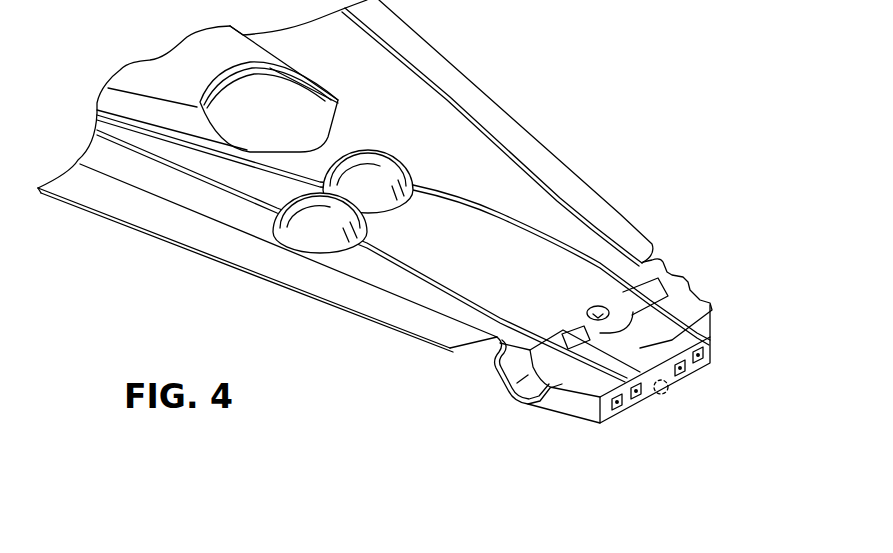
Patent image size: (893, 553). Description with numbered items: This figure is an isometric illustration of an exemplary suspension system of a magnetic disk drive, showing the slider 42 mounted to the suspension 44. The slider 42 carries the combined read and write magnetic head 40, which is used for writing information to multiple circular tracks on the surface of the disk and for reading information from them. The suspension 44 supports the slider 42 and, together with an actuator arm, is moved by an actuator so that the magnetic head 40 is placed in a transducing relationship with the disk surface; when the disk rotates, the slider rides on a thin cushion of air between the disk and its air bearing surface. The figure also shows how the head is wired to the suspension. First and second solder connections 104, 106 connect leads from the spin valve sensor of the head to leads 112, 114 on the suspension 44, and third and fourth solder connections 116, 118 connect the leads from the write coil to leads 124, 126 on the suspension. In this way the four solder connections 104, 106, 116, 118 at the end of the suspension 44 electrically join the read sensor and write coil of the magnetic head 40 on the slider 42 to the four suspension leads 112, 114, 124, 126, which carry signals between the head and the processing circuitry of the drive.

The magnetic head 40 is at (663, 396).
The slider 42 is at (548, 414).
The suspension 44 is at (374, 191).
The first solder connection 104 is at (602, 412).
The second solder connection 106 is at (704, 354).
The lead 112 is at (390, 262).
The lead 114 is at (571, 248).
The third solder connection 116 is at (634, 401).
The fourth solder connection 118 is at (685, 374).
The lead 124 is at (433, 285).
The lead 126 is at (490, 216).